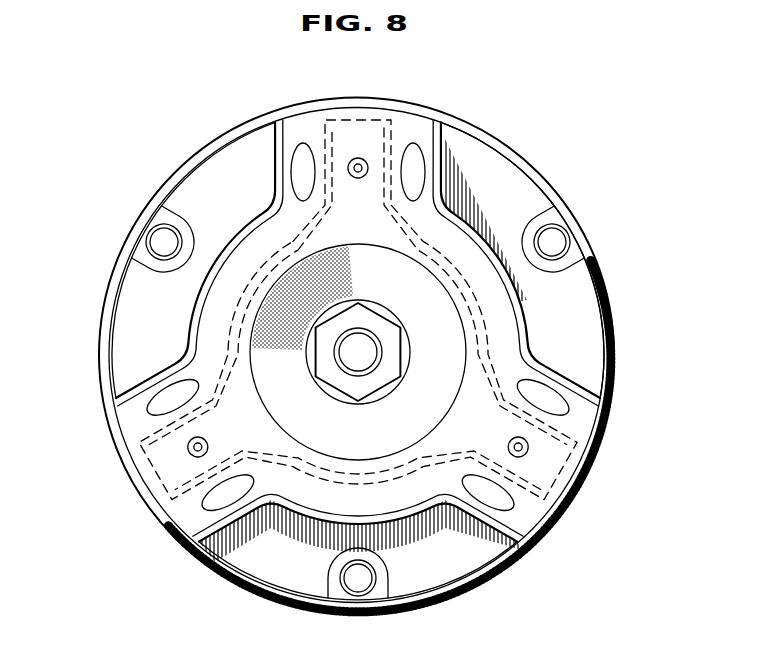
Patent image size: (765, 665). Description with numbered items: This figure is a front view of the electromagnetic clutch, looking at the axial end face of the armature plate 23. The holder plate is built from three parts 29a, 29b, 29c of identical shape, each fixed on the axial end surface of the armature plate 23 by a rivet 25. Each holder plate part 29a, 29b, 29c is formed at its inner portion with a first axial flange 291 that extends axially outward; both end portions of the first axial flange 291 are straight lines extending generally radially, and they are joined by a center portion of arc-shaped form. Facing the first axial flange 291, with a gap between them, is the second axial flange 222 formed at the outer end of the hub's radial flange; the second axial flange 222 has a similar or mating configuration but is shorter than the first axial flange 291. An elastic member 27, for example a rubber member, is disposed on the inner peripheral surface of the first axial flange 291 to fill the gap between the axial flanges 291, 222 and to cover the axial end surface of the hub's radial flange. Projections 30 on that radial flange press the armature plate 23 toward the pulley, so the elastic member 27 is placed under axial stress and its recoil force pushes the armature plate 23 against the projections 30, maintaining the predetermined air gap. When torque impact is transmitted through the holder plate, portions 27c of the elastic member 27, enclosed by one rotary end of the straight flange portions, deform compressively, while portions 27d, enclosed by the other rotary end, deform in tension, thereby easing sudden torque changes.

The armature plate 23 is at (483, 130).
The rivet 25 is at (158, 233).
The elastic member 27 is at (527, 453).
The compressive deformation portions of elastic member 27c is at (304, 146).
The tensile deformation portions of elastic member 27d is at (415, 142).
The holder plate part 29a is at (208, 177).
The holder plate part 29b is at (296, 583).
The holder plate part 29c is at (573, 290).
The first axial flange 291 is at (188, 303).
The second axial flange 222 is at (225, 365).
The projection 30 is at (553, 507).